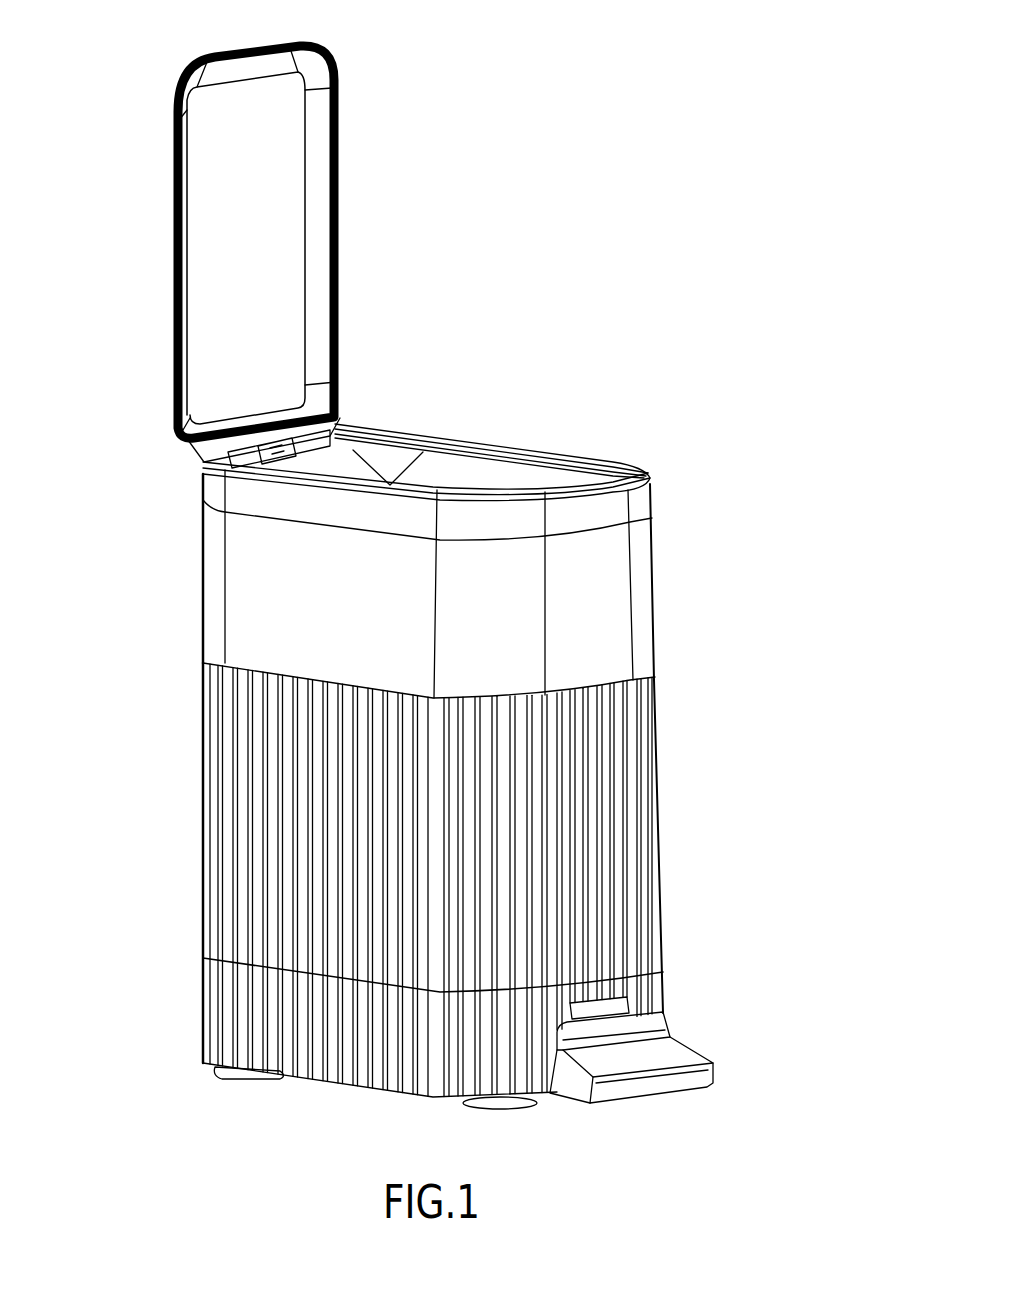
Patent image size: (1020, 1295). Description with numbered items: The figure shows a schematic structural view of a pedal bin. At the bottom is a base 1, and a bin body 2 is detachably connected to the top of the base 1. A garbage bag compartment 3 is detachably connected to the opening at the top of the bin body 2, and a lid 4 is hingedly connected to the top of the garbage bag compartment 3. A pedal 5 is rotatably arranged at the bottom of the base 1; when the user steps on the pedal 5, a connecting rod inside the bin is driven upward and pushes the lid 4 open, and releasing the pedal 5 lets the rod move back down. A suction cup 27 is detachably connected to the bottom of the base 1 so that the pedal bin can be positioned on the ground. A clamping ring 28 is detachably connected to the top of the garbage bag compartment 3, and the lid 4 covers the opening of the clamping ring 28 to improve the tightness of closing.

The base 1 is at (218, 990).
The bin body 2 is at (657, 815).
The garbage bag compartment 3 is at (657, 632).
The lid 4 is at (340, 245).
The pedal 5 is at (667, 1057).
The suction cup 27 is at (220, 1070).
The clamping ring 28 is at (652, 500).